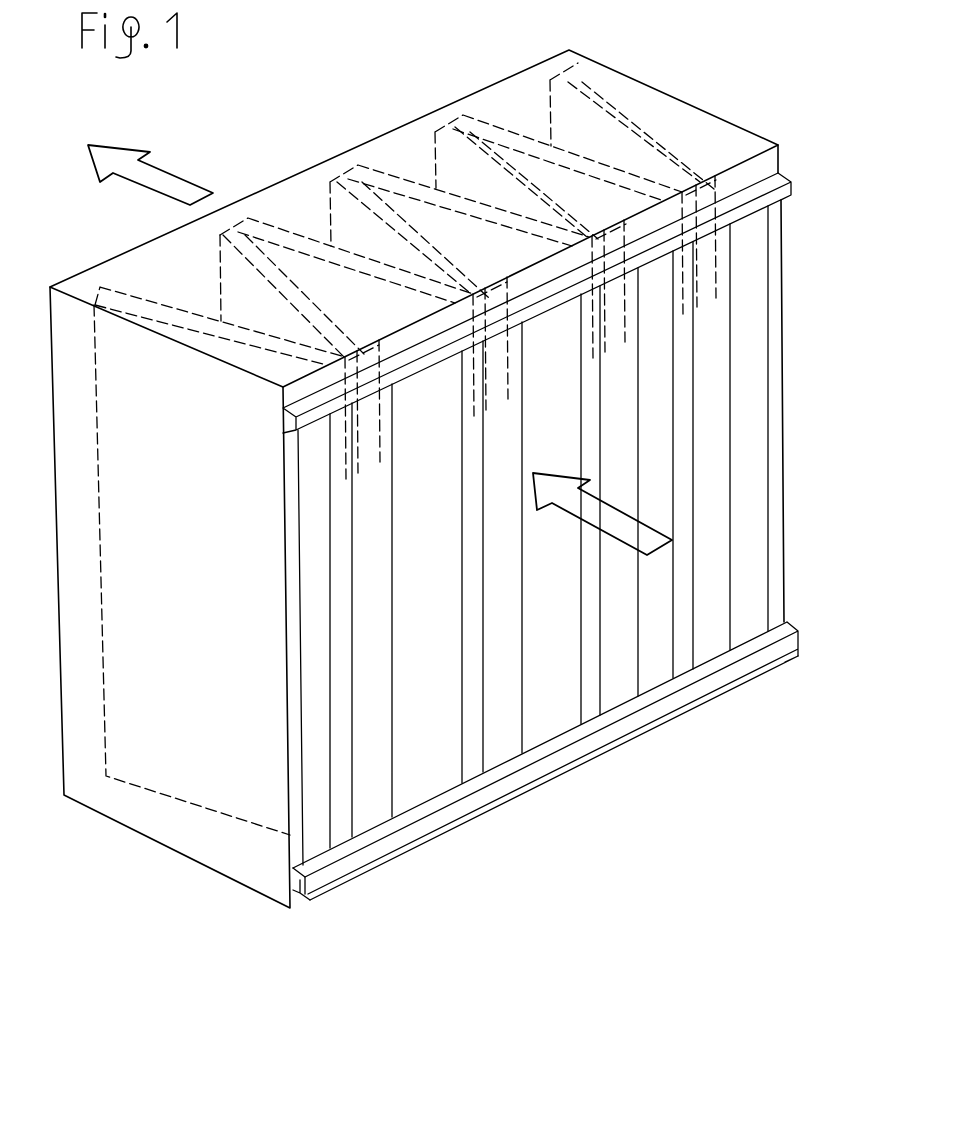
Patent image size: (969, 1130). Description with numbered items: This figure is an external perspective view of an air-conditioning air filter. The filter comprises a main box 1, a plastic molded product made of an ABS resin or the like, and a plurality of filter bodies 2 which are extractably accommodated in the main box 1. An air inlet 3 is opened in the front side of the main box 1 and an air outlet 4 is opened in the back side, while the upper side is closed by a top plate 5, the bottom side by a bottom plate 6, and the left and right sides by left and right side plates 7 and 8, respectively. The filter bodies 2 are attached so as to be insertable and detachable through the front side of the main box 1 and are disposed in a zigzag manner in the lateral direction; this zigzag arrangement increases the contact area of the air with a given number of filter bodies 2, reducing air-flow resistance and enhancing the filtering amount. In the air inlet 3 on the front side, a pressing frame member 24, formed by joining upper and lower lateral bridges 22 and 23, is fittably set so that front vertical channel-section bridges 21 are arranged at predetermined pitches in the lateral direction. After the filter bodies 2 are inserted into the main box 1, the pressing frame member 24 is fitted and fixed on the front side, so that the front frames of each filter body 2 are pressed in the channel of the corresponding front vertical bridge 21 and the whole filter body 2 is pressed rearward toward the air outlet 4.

The main box 1 is at (365, 140).
The filter bodies 2 is at (587, 220).
The air inlet 3 is at (537, 712).
The air outlet 4 is at (287, 200).
The top plate 5 is at (502, 98).
The bottom plate 6 is at (297, 902).
The left side plate 7 is at (185, 790).
The right side plate 8 is at (768, 362).
The front vertical channel-section bridges 21 is at (718, 533).
The upper lateral bridge 22 is at (740, 207).
The lower lateral bridge 23 is at (660, 697).
The pressing frame member 24 is at (623, 745).